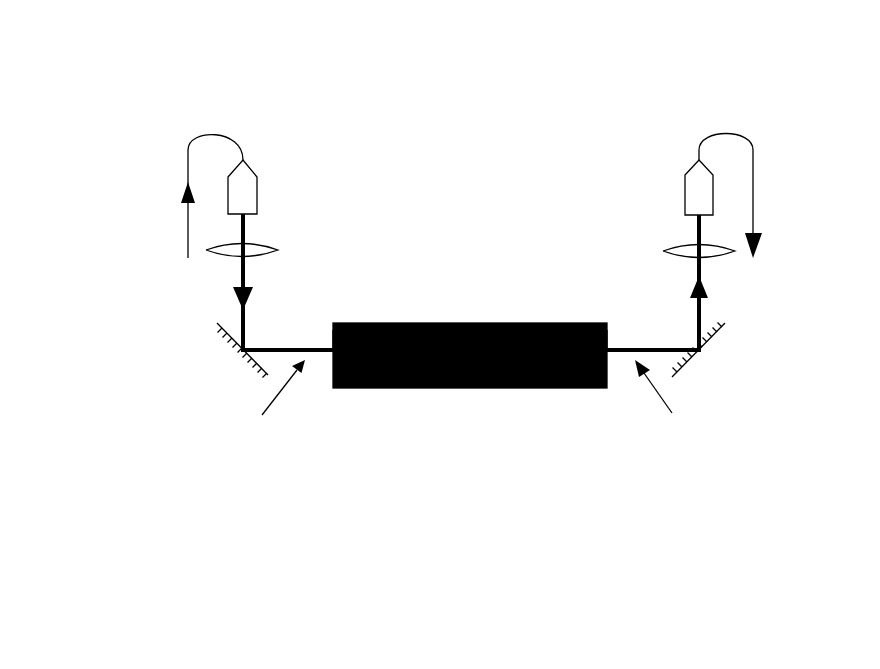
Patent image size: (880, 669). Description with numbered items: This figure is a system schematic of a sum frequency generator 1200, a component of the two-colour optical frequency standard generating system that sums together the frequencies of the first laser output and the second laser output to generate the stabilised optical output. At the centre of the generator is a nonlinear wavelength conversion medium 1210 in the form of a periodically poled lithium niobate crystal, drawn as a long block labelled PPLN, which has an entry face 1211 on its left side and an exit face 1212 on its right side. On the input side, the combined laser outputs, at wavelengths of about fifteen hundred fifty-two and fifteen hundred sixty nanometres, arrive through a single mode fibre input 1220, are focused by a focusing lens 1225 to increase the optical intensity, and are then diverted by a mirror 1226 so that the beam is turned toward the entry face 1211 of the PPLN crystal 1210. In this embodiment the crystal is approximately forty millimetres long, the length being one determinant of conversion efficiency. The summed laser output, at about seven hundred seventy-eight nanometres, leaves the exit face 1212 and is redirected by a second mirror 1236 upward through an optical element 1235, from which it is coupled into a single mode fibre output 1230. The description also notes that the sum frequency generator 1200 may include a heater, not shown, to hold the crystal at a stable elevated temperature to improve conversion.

The sum frequency generator 1200 is at (104, 102).
The nonlinear wavelength conversion medium 1210 is at (420, 323).
The entry face 1211 is at (332, 340).
The exit face 1212 is at (607, 338).
The single mode fibre input 1220 is at (213, 132).
The focusing lens 1225 is at (260, 242).
The mirror 1226 is at (212, 335).
The single mode fibre output 1230 is at (733, 133).
The optical element 1235 is at (682, 242).
The mirror 1236 is at (725, 325).